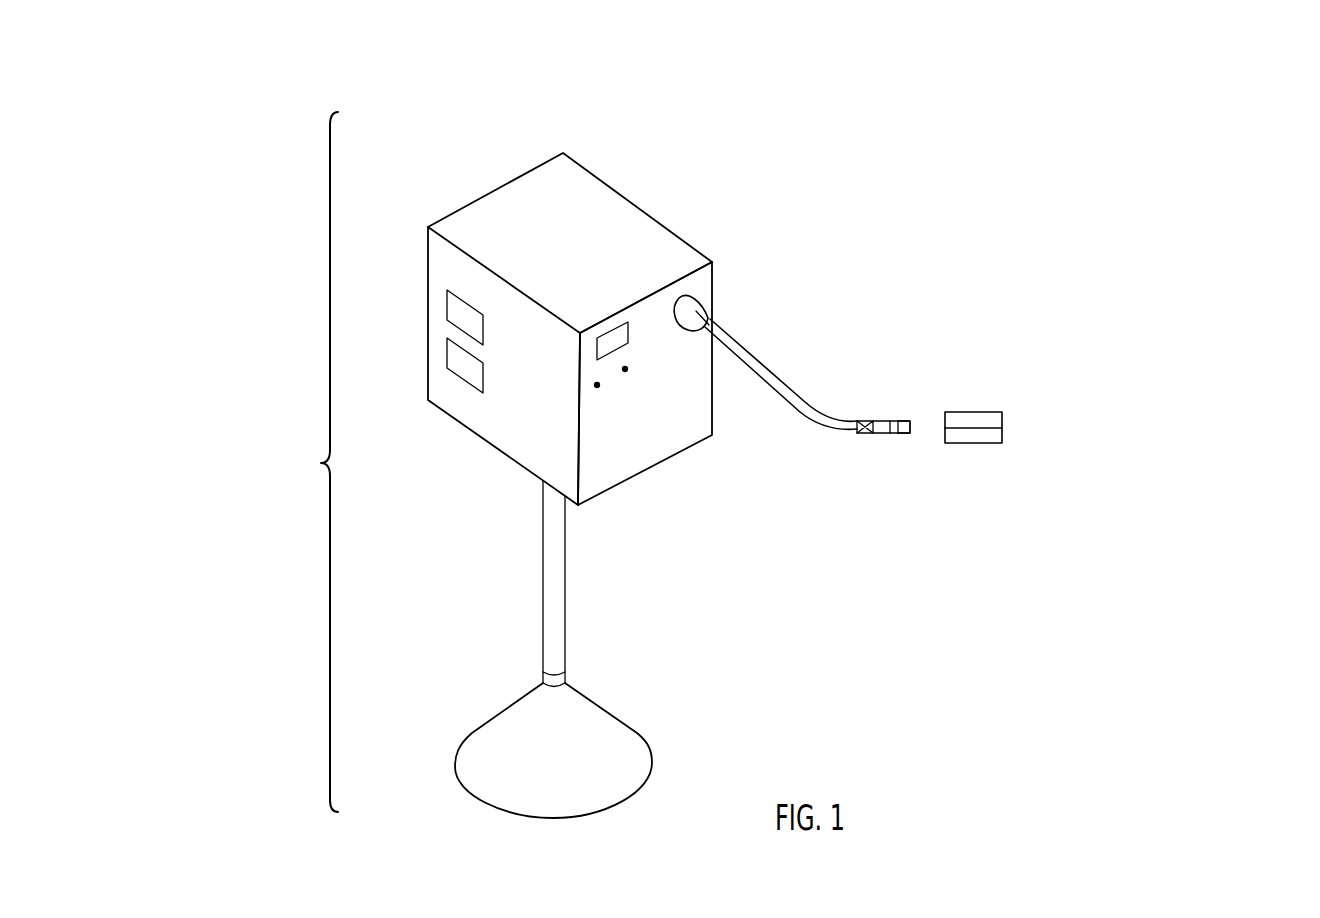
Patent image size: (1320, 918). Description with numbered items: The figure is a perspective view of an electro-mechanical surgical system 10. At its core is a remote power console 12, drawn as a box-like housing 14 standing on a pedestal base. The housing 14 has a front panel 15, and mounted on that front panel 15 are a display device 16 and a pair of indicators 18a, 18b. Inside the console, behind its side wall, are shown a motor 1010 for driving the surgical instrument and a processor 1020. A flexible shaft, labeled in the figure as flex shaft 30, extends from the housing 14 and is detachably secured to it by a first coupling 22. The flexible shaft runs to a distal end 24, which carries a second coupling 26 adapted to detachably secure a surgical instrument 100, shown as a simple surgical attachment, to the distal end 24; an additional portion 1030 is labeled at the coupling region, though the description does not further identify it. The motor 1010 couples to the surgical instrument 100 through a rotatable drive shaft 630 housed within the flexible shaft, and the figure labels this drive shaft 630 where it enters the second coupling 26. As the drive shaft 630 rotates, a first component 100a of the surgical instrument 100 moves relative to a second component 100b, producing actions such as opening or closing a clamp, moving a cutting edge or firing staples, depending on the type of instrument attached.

The electro-mechanical surgical system 10 is at (246, 462).
The remote power console 12 is at (640, 178).
The housing 14 is at (542, 197).
The front panel 15 is at (697, 418).
The display device 16 is at (597, 344).
The indicator 18a is at (597, 385).
The indicator 18b is at (652, 500).
The first coupling 22 is at (700, 313).
The distal end 24 is at (916, 354).
The second coupling 26 is at (889, 409).
The flex shaft 30 is at (809, 418).
The surgical instrument 100 is at (1101, 416).
The first component 100a is at (982, 412).
The second component 100b is at (980, 443).
The rotatable drive shaft 630 is at (863, 420).
The motor 1010 is at (458, 300).
The processor 1020 is at (452, 358).
The coupling portion 1030 is at (893, 418).